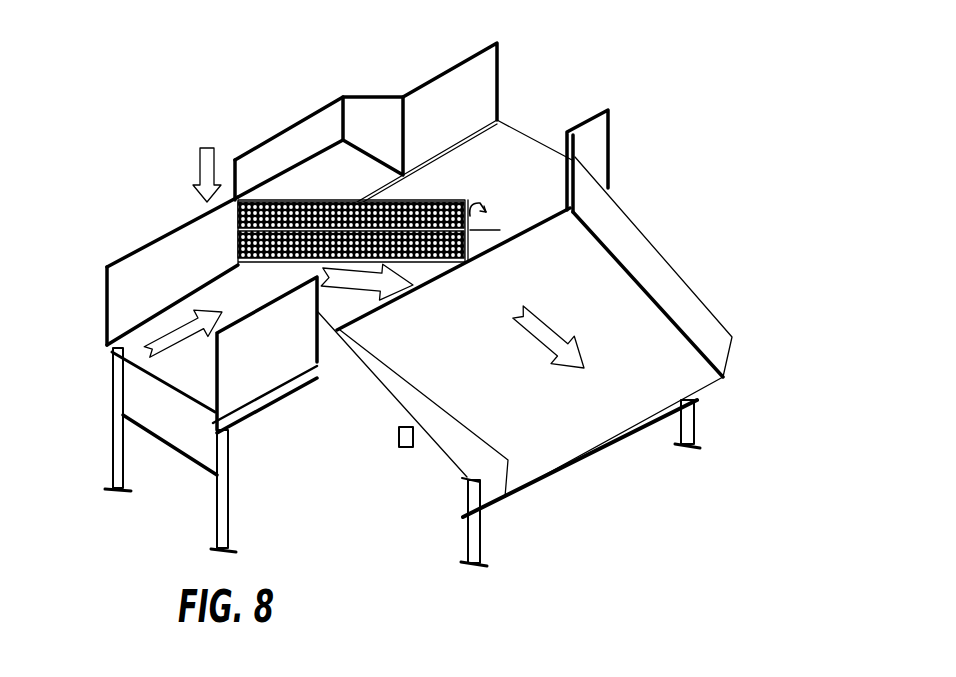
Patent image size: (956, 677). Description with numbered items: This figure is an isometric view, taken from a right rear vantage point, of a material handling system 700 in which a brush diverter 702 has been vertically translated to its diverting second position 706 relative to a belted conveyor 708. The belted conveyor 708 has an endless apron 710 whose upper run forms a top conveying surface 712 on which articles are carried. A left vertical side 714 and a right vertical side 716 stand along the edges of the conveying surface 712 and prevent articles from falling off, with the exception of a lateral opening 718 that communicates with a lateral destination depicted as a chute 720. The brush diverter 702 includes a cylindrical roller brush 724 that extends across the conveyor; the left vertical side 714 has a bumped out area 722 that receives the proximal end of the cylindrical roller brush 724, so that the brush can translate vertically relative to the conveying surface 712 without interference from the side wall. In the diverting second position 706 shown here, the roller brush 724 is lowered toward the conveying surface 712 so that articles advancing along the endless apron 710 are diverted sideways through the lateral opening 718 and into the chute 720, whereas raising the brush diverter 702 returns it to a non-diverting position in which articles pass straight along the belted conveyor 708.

The material handling system 700 is at (668, 41).
The brush diverter 702 is at (280, 198).
The diverting second position 706 is at (253, 149).
The belted conveyor 708 is at (493, 187).
The endless apron 710 is at (430, 80).
The top conveying surface 712 is at (518, 147).
The left vertical side 714 is at (140, 247).
The right vertical side 716 is at (247, 367).
The lateral opening 718 is at (573, 212).
The chute 720 is at (627, 420).
The bumped out area 722 is at (345, 138).
The cylindrical roller brush 724 is at (400, 203).